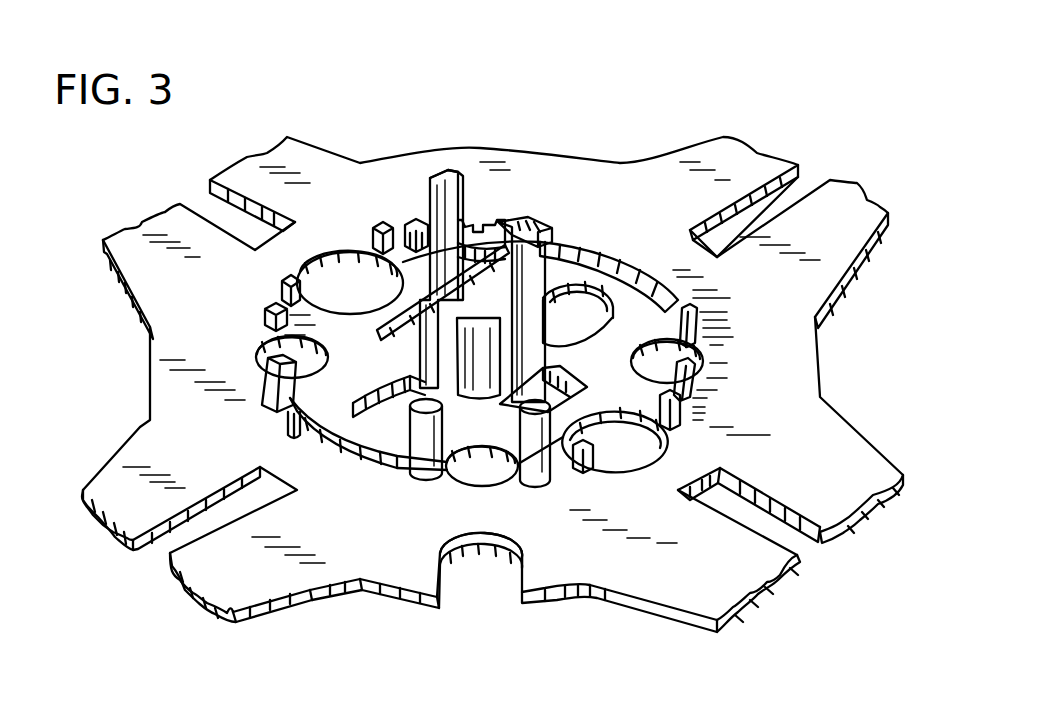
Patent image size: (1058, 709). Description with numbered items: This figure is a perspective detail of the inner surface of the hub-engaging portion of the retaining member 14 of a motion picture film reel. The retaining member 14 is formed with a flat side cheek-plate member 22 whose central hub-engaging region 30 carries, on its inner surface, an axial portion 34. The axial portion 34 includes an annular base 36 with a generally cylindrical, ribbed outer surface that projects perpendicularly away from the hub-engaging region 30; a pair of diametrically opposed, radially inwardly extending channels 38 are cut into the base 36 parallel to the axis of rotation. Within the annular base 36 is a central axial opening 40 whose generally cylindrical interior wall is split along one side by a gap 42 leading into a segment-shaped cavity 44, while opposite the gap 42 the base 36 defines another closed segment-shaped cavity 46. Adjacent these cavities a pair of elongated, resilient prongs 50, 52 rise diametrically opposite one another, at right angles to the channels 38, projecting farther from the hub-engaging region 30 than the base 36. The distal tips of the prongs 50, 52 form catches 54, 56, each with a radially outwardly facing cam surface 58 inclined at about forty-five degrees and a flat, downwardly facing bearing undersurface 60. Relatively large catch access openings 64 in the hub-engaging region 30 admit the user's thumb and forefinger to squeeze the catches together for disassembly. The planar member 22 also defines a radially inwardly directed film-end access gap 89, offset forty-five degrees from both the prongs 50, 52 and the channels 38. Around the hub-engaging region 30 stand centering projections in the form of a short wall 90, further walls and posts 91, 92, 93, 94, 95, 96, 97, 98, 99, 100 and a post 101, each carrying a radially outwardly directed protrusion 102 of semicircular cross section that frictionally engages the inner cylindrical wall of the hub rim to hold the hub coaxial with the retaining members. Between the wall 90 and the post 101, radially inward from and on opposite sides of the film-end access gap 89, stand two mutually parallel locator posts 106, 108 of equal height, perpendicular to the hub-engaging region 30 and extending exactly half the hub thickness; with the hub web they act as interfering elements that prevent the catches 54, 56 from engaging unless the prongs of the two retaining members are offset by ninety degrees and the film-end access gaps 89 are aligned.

The retaining member 14 is at (728, 121).
The side cheek-plate member 22 is at (700, 582).
The hub-engaging region 30 is at (555, 170).
The axial portion 34 is at (560, 278).
The annular base 36 is at (380, 300).
The channels 38 is at (423, 363).
The central axial opening 40 is at (490, 300).
The gap 42 is at (378, 330).
The segment-shaped cavity 44 is at (492, 330).
The closed segment-shaped cavity 46 is at (410, 220).
The prong 50 is at (455, 210).
The prong 52 is at (640, 252).
The catch 54 is at (430, 175).
The catch 56 is at (540, 215).
The cam surfaces 58 is at (440, 215).
The bearing undersurfaces 60 is at (432, 215).
The catch access openings 64 is at (561, 319).
The film-end access gaps 89 is at (479, 545).
The wall 90 is at (326, 462).
The centering wall or post 91 is at (262, 386).
The centering wall or post 92 is at (270, 306).
The centering wall or post 93 is at (300, 298).
The centering wall or post 94 is at (377, 232).
The centering wall or post 95 is at (405, 215).
The centering wall or post 96 is at (512, 225).
The centering wall or post 97 is at (600, 268).
The centering wall or post 98 is at (662, 333).
The centering wall or post 99 is at (693, 378).
The centering wall or post 100 is at (640, 445).
The post 101 is at (602, 410).
The protrusions 102 is at (288, 430).
The locator post 106 is at (425, 462).
The locator post 108 is at (533, 463).